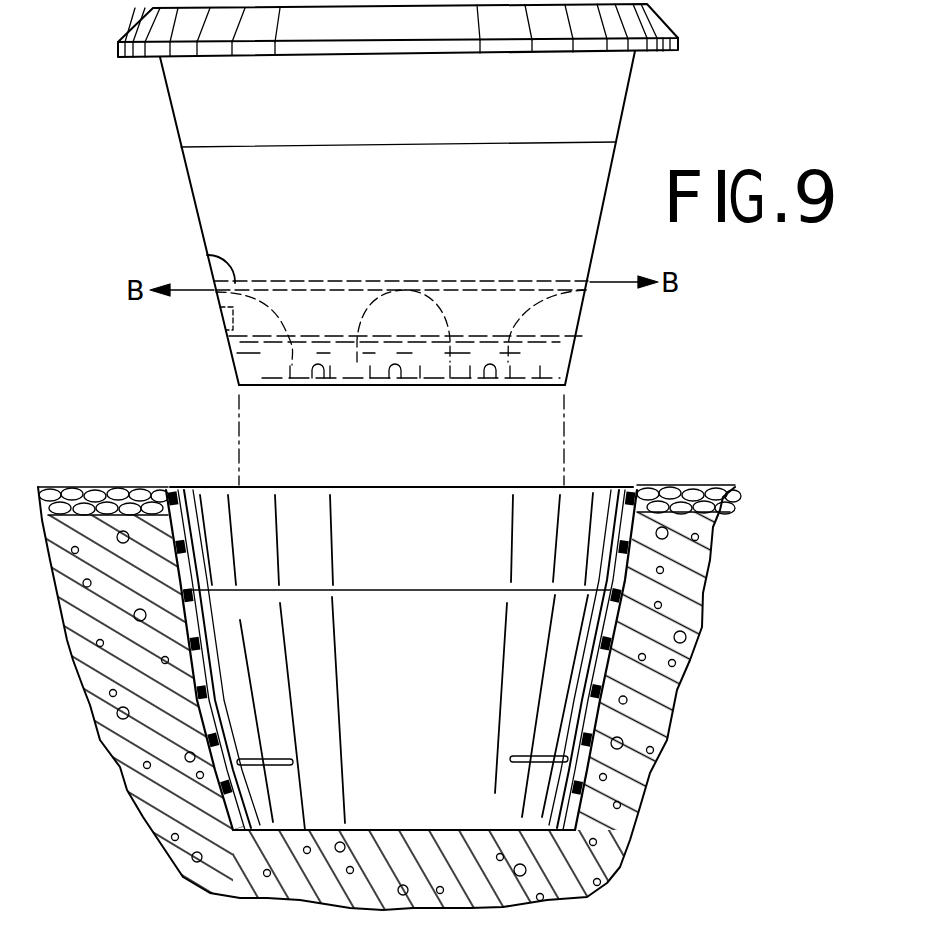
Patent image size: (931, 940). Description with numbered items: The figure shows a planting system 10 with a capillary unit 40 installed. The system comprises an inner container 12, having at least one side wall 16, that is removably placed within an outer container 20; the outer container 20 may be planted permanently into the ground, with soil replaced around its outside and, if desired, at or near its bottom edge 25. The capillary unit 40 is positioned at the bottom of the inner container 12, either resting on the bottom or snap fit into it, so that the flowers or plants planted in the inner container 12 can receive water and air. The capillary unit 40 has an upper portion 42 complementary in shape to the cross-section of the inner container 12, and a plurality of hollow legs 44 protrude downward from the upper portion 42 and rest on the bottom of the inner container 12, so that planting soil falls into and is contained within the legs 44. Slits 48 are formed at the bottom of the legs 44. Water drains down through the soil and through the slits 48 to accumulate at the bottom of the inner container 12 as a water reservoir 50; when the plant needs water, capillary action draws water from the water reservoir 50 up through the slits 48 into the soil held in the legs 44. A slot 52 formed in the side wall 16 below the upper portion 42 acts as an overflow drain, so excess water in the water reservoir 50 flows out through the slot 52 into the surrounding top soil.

The planting system 10 is at (155, 448).
The inner container 12 is at (411, 228).
The side wall 16 is at (596, 245).
The outer container 20 is at (620, 690).
The bottom edge 25 is at (632, 849).
The capillary unit 40 is at (507, 308).
The upper portion 42 is at (207, 255).
The legs 44 is at (292, 345).
The slits 48 is at (313, 378).
The water reservoir 50 is at (361, 378).
The slot 52 is at (223, 318).